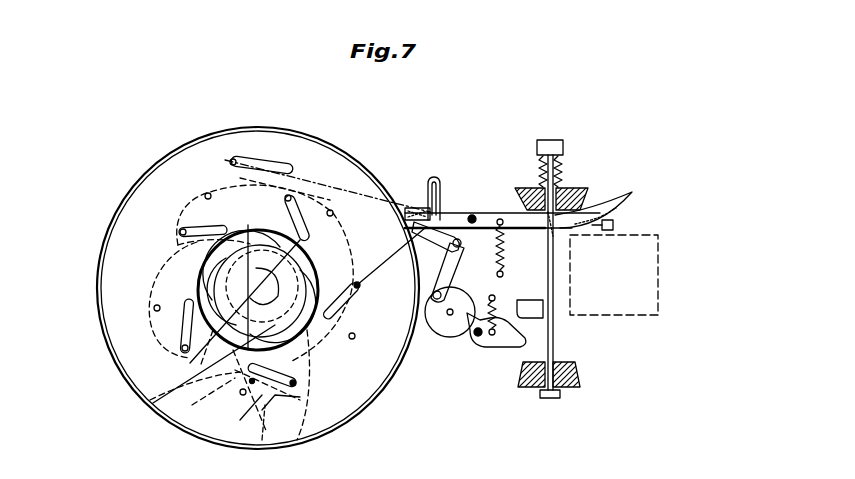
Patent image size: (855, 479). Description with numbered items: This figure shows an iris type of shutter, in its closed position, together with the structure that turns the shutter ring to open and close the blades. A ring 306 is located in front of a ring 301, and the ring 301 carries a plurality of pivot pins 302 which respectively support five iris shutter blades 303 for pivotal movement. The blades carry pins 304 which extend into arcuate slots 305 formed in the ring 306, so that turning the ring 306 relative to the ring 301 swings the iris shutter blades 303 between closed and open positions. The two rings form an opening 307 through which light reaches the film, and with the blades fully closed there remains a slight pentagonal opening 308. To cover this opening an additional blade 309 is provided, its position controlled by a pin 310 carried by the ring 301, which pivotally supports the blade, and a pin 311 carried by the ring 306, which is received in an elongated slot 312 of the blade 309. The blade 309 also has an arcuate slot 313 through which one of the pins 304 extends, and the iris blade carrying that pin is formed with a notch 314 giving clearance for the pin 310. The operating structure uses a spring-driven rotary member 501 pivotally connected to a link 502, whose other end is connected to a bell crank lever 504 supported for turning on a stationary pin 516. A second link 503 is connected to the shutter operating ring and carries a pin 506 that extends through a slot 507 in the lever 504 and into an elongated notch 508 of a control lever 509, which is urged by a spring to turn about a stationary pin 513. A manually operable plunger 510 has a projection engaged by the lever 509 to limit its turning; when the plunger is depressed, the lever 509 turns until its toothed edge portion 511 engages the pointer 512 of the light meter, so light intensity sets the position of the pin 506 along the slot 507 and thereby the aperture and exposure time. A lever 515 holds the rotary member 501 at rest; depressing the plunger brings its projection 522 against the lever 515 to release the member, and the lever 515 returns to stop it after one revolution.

The ring 301 is at (377, 397).
The pivot pins 302 is at (208, 192).
The iris shutter blades 303 is at (190, 210).
The pins 304 is at (288, 196).
The arcuate slots 305 is at (180, 230).
The ring 306 is at (256, 142).
The opening 307 is at (223, 323).
The opening 308 is at (254, 282).
The blade 309 is at (317, 430).
The pin 310 is at (196, 436).
The pin 311 is at (240, 420).
The elongated slot 312 is at (262, 440).
The arcuate slot 313 is at (192, 405).
The notch 314 is at (300, 397).
The rotary member 501 is at (455, 322).
The link 502 is at (455, 273).
The link 503 is at (285, 170).
The bell crank lever 504 is at (442, 208).
The pin 506 is at (410, 233).
The slot 507 is at (431, 178).
The elongated notch 508 is at (440, 212).
The control lever 509 is at (500, 218).
The plunger 510 is at (560, 177).
The toothed edge portion 511 is at (605, 210).
The pointer 512 is at (590, 229).
The stationary pin 513 is at (473, 216).
The lever 515 is at (507, 340).
The stationary pin 516 is at (408, 258).
The projection 522 is at (535, 306).